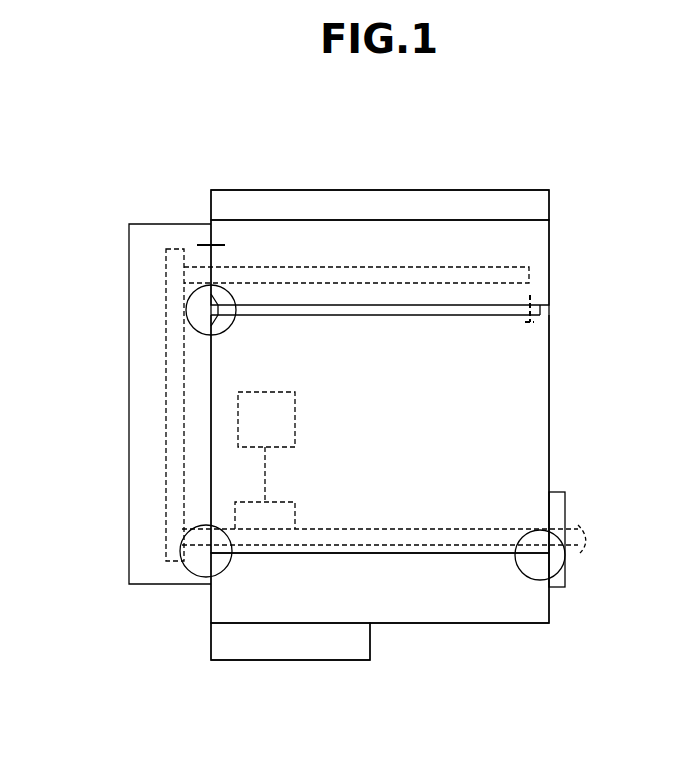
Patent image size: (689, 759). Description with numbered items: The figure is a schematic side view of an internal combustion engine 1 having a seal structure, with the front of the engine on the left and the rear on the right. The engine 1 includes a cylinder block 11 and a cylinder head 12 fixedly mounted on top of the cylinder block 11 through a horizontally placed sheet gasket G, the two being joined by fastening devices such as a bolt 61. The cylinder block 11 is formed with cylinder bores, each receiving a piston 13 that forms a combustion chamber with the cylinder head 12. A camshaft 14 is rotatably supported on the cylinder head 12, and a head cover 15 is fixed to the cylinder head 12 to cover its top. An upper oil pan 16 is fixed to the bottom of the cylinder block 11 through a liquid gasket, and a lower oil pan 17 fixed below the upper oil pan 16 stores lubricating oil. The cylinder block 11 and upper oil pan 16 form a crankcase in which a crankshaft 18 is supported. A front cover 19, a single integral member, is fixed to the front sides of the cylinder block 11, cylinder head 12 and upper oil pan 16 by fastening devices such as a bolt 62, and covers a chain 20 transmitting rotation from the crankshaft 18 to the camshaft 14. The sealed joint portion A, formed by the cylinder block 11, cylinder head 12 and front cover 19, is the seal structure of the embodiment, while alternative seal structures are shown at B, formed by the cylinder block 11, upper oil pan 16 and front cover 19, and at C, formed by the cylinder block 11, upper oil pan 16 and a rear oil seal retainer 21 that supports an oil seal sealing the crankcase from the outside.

The internal combustion engine 1 is at (152, 168).
The cylinder block 11 is at (550, 401).
The cylinder head 12 is at (550, 267).
The piston 13 is at (238, 400).
The camshaft 14 is at (478, 267).
The head cover 15 is at (550, 203).
The upper oil pan 16 is at (520, 624).
The lower oil pan 17 is at (290, 661).
The crankshaft 18 is at (437, 529).
The front cover 19 is at (128, 335).
The chain 20 is at (166, 450).
The rear oil seal retainer 21 is at (566, 505).
The bolt 61 is at (534, 322).
The bolt 62 is at (199, 244).
The sealed joint portion A is at (188, 290).
The seal structure B is at (186, 572).
The seal structure C is at (564, 573).
The sheet gasket G is at (541, 312).